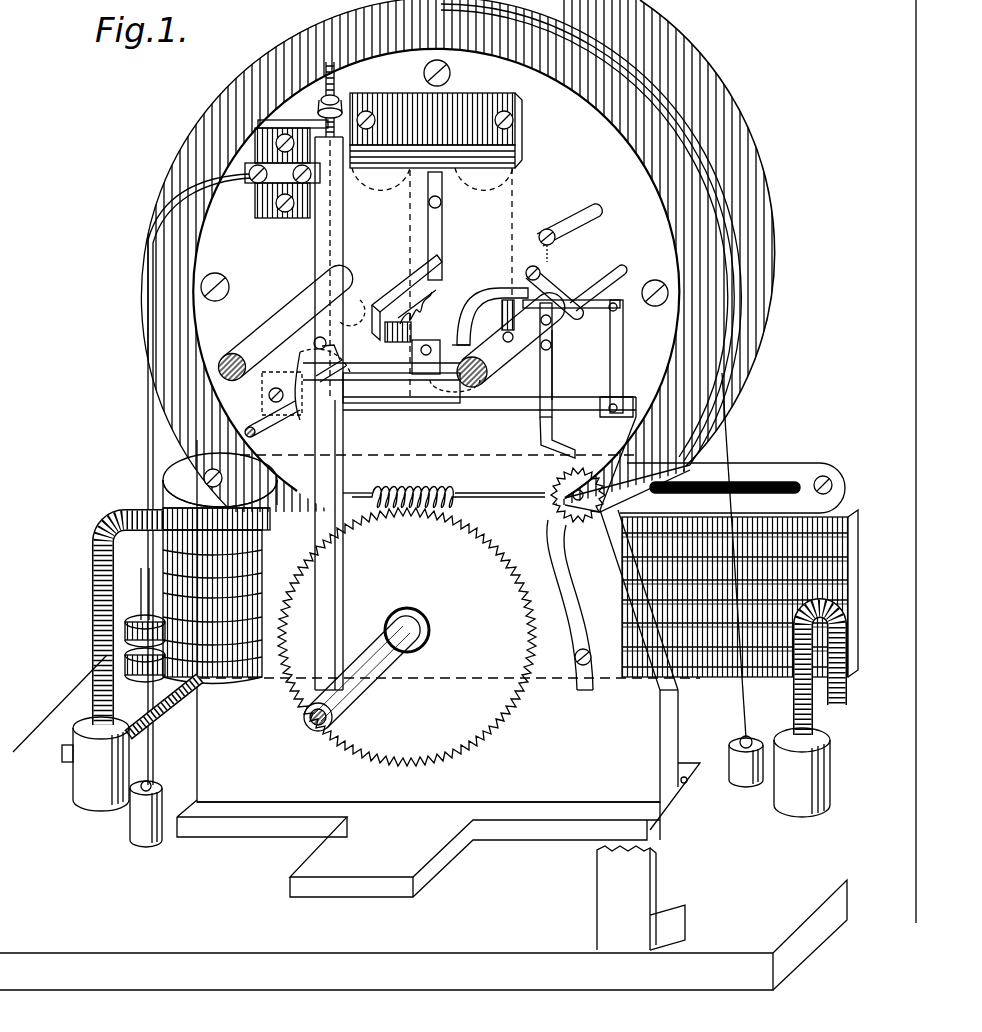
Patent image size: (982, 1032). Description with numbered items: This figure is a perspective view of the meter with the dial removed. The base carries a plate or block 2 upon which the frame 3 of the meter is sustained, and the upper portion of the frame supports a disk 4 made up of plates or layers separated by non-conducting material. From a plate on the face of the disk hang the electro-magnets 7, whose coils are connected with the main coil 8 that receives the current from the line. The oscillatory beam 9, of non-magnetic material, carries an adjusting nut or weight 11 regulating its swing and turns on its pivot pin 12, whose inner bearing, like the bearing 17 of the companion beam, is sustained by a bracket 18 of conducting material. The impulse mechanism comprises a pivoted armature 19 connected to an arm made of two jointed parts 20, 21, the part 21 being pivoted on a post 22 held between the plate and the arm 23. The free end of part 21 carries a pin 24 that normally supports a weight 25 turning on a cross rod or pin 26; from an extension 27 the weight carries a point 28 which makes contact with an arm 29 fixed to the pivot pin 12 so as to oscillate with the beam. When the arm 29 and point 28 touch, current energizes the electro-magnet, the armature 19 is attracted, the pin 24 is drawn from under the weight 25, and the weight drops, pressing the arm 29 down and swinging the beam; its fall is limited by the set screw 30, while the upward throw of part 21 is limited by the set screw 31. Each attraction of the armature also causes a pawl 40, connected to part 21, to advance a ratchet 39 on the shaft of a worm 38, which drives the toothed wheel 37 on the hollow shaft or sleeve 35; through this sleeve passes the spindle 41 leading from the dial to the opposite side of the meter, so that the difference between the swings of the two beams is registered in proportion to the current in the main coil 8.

The plate or block 2 is at (423, 935).
The frame 3 is at (448, 628).
The disk 4 is at (458, 298).
The electro-magnet 7 is at (385, 168).
The main coil 8 is at (760, 508).
The oscillatory beam 9 is at (322, 252).
The adjusting nut or weight 11 is at (326, 108).
The pivot pin 12 is at (326, 345).
The bearing 17 is at (428, 262).
The bracket 18 is at (400, 318).
The armature 19 is at (530, 412).
The arm part 20 is at (614, 360).
The arm part 21 is at (596, 300).
The post 22 is at (576, 318).
The arm 23 is at (570, 290).
The pin 24 is at (503, 318).
The weight 25 is at (490, 288).
The cross rod or pin 26 is at (416, 312).
The extension 27 is at (466, 337).
The point 28 is at (420, 374).
The arm 29 is at (400, 400).
The set screw 30 is at (545, 350).
The set screw 31 is at (548, 232).
The hollow shaft or sleeve 35 is at (360, 682).
The toothed wheel 37 is at (407, 637).
The worm 38 is at (444, 485).
The ratchet 39 is at (552, 482).
The pawl 40 is at (565, 365).
The spindle 41 is at (322, 730).